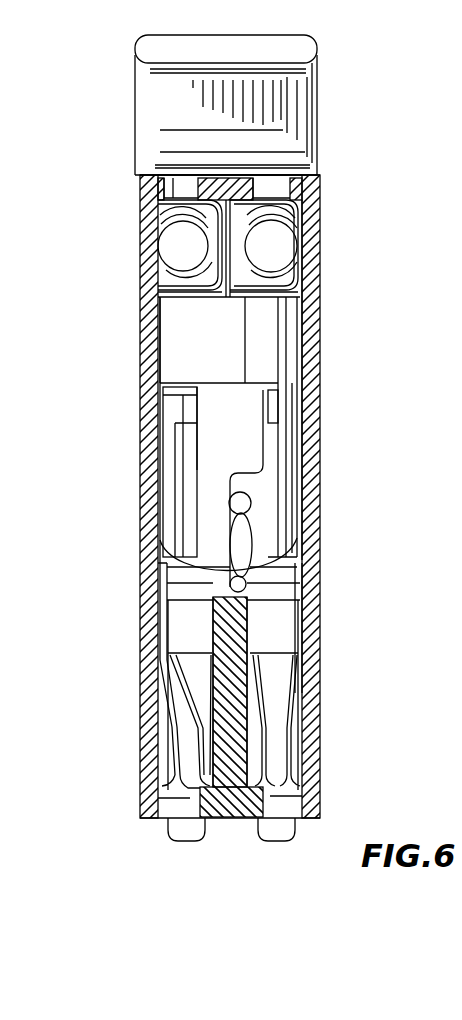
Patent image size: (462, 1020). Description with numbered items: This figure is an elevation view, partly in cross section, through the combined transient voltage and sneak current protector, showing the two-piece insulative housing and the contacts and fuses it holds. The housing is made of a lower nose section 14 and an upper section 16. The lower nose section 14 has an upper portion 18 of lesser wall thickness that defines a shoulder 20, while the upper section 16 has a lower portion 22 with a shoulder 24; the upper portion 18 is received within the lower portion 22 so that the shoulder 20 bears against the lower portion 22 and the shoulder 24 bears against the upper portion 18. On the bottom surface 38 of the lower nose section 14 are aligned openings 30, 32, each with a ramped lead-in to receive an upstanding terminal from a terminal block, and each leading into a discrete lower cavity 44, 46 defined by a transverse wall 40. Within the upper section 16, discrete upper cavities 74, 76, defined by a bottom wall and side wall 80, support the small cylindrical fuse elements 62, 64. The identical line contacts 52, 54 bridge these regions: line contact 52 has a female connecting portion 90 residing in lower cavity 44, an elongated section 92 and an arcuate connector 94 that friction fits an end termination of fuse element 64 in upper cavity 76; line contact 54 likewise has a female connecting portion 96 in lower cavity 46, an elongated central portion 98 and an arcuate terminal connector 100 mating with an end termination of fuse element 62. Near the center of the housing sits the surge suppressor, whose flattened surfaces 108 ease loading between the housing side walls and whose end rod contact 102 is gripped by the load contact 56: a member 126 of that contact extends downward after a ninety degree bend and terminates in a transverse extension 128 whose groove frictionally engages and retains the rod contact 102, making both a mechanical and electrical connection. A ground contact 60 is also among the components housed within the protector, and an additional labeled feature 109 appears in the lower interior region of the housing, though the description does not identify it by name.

The lower nose section 14 is at (320, 714).
The upper section 16 is at (321, 518).
The upper portion 18 is at (300, 612).
The shoulder 20 is at (308, 678).
The lower portion 22 is at (321, 623).
The shoulder 24 is at (322, 568).
The opening 30 is at (190, 803).
The opening 32 is at (298, 797).
The bottom surface 38 is at (242, 820).
The transverse wall 40 is at (260, 730).
The lower cavity 44 is at (178, 792).
The lower cavity 46 is at (322, 768).
The line contact 52 is at (146, 421).
The line contact 54 is at (305, 405).
The load contact 56 is at (283, 405).
The ground contact 60 is at (162, 498).
The fuse element 62 is at (292, 222).
The fuse element 64 is at (168, 266).
The upper cavity 74 is at (292, 207).
The upper cavity 76 is at (160, 230).
The side wall 80 is at (180, 344).
The female connecting portion 90 is at (170, 718).
The elongated section 92 is at (203, 465).
The arcuate connector 94 is at (205, 300).
The female connecting portion 96 is at (298, 688).
The elongated central portion 98 is at (303, 453).
The arcuate terminal connector 100 is at (290, 240).
The end rod contact 102 is at (250, 503).
The flattened surface 108 is at (167, 527).
The cavity floor 109 is at (300, 527).
The downwardly extending member 126 is at (281, 435).
The extension 128 is at (260, 483).